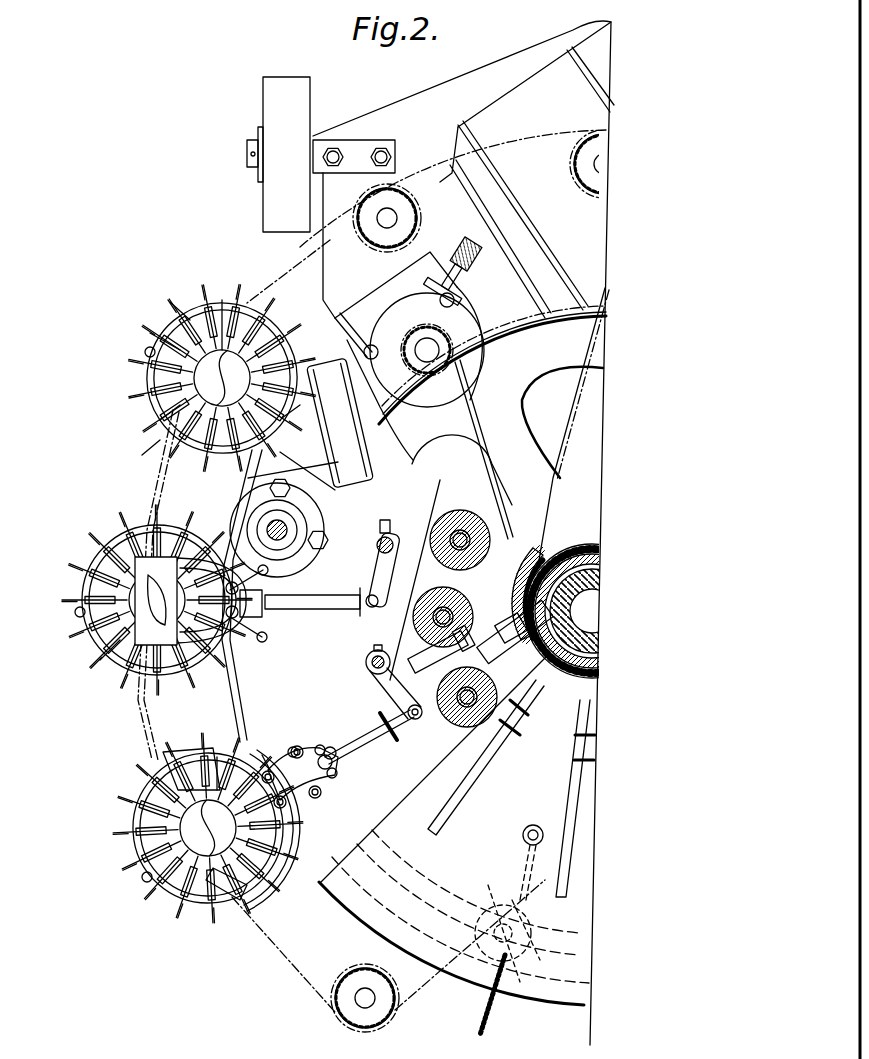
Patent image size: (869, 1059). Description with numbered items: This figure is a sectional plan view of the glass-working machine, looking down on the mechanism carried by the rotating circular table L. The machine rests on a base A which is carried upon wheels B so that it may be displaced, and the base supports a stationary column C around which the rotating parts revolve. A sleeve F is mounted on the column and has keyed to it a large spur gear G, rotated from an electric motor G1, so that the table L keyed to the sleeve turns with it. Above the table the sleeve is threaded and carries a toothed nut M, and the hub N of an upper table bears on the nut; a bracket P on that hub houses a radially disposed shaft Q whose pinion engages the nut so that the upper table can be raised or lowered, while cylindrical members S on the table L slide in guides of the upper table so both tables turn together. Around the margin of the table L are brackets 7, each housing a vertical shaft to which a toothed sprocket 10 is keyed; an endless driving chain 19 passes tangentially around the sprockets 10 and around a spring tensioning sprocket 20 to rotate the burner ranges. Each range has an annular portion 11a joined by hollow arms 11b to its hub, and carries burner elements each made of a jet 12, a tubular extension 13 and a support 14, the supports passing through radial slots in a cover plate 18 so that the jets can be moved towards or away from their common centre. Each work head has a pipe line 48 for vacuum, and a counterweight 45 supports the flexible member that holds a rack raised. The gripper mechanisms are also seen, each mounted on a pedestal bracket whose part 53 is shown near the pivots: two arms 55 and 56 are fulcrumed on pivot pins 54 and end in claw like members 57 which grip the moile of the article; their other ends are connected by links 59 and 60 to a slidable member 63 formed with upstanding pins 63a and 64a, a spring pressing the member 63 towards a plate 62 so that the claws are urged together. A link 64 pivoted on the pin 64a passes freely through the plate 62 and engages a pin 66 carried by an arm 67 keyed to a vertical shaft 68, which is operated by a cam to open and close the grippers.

The wheels B is at (290, 90).
The base A is at (398, 116).
The electric motor G1 is at (542, 103).
The toothed sprocket 10 is at (378, 228).
The hollow radially disposed arms 11b is at (215, 380).
The upper annular portion 11a is at (178, 420).
The jet 12 is at (198, 348).
The tubular extension 13 is at (171, 303).
The support 14 is at (177, 323).
The circular cover plate 18 is at (173, 437).
The circular table L is at (258, 462).
The cylindrical members S is at (288, 528).
The bracket member 7 is at (343, 442).
The large spur gear G is at (420, 365).
The endless driving chain 19 is at (580, 395).
The plate 62 is at (370, 590).
The counterweight 45 is at (433, 551).
The stationary column C is at (572, 546).
The sleeve F is at (592, 548).
The internally threaded member or nut M is at (532, 572).
The hub N is at (533, 592).
The radially disposed shaft Q is at (432, 660).
The bracket P is at (487, 650).
The vertical shaft 68 is at (366, 660).
The arm 67 is at (385, 681).
The pin 66 is at (415, 719).
The link 64 is at (365, 745).
The upstanding pin 64a is at (333, 750).
The link 60 is at (299, 745).
The upstanding pin 63a is at (320, 745).
The slidable member 63 is at (332, 764).
The link 59 is at (321, 791).
The pin 53 is at (286, 803).
The journals or pivot pins 54 is at (276, 800).
The arm 55 is at (283, 837).
The arm 56 is at (217, 760).
The claw like member 57 is at (188, 762).
The pipe line 48 is at (480, 790).
The spring tensioning sprocket 20 is at (487, 957).